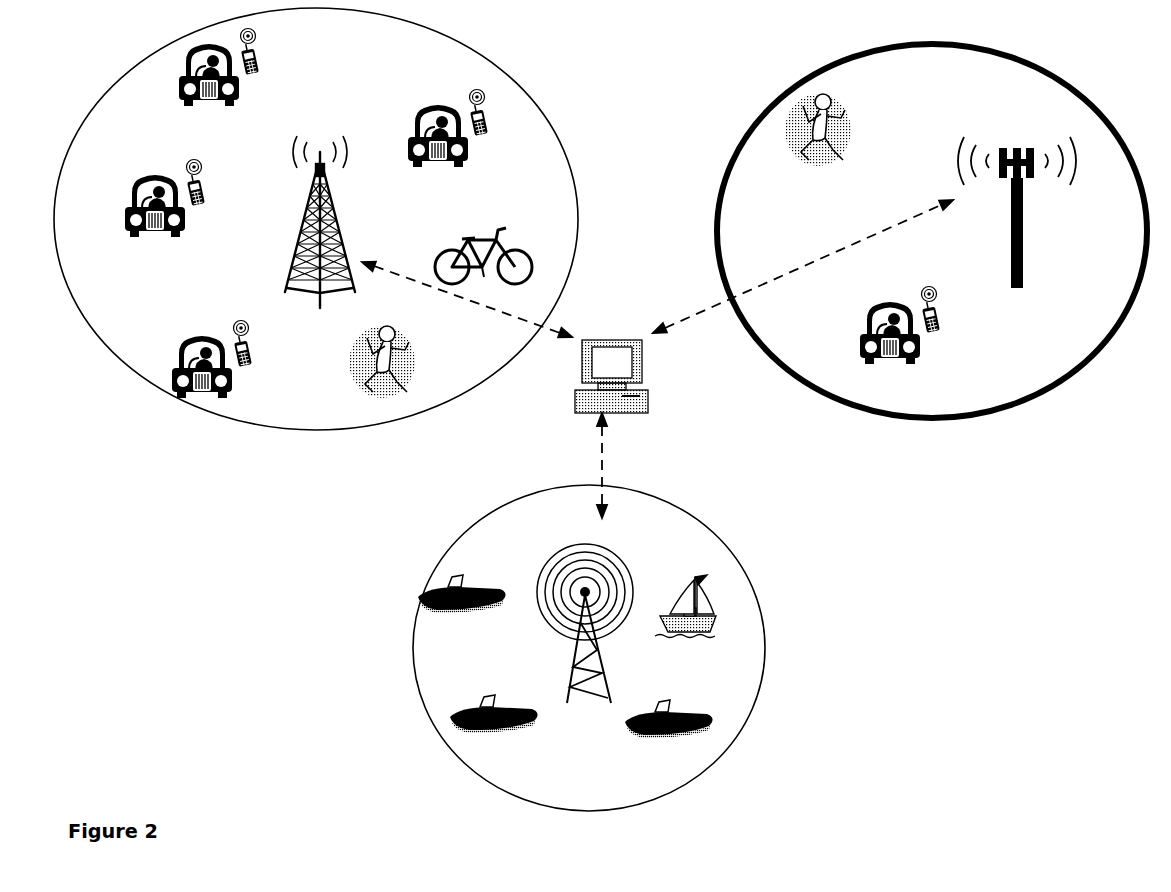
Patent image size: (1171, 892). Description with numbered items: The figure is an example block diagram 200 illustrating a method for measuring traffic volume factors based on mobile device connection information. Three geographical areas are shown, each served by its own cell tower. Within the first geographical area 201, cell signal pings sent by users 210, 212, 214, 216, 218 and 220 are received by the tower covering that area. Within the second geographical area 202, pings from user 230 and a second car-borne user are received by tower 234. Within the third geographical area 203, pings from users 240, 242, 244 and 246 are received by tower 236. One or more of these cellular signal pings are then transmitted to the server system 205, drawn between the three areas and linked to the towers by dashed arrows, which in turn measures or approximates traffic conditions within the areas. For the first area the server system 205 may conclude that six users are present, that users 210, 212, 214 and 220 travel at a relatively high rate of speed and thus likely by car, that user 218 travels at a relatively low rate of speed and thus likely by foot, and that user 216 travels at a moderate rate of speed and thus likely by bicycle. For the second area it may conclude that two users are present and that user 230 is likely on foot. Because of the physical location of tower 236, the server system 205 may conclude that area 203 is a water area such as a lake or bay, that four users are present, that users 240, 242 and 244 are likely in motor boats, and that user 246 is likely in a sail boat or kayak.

The block diagram 200 is at (619, 48).
The geographical area 201 is at (316, 237).
The geographical area 202 is at (932, 247).
The geographical area 203 is at (589, 659).
The server system 205 is at (625, 353).
The user 210 is at (215, 80).
The user 212 is at (161, 211).
The user 214 is at (205, 351).
The user 216 is at (384, 346).
The user 218 is at (484, 245).
The user 220 is at (445, 116).
The user 230 is at (809, 143).
The tower 234 is at (1017, 200).
The tower 236 is at (597, 612).
The user 240 is at (468, 604).
The user 242 is at (497, 727).
The user 244 is at (676, 707).
The user 246 is at (692, 596).